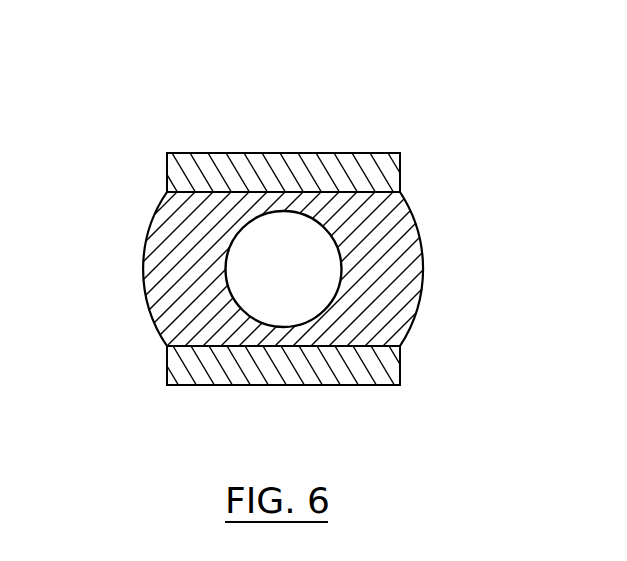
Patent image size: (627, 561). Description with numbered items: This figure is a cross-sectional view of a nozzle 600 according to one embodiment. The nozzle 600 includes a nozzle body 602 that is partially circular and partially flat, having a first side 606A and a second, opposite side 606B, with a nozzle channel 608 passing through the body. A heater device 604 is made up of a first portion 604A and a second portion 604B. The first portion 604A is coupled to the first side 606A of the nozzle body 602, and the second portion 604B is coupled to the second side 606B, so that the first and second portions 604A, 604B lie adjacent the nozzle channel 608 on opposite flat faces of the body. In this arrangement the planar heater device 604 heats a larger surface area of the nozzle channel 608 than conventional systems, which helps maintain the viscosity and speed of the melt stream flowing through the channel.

The nozzle 600 is at (468, 132).
The nozzle body 602 is at (383, 256).
The heater device 604 is at (493, 148).
The first portion 604A is at (367, 152).
The second portion 604B is at (372, 386).
The first side 606A is at (153, 186).
The second side 606B is at (153, 352).
The nozzle channel 608 is at (244, 263).